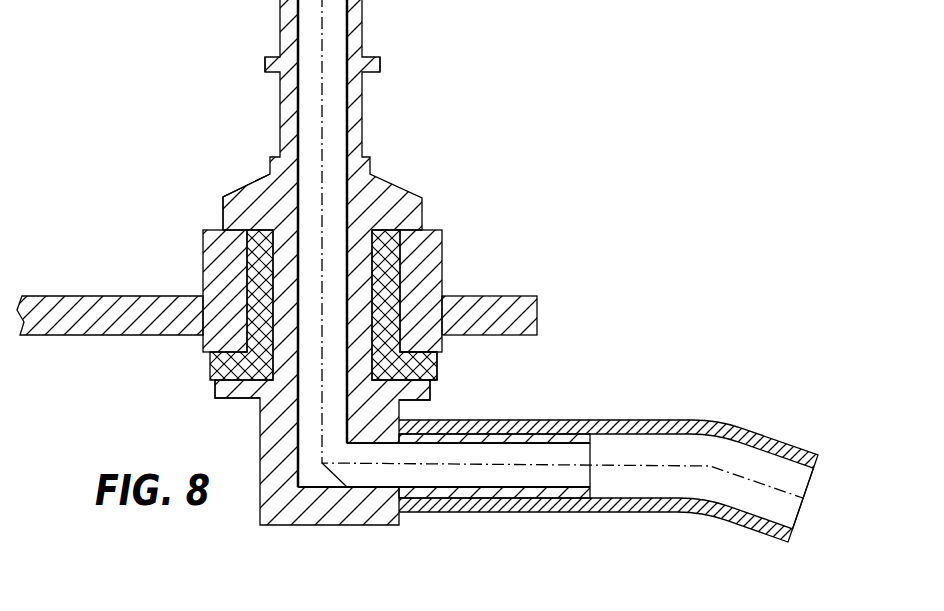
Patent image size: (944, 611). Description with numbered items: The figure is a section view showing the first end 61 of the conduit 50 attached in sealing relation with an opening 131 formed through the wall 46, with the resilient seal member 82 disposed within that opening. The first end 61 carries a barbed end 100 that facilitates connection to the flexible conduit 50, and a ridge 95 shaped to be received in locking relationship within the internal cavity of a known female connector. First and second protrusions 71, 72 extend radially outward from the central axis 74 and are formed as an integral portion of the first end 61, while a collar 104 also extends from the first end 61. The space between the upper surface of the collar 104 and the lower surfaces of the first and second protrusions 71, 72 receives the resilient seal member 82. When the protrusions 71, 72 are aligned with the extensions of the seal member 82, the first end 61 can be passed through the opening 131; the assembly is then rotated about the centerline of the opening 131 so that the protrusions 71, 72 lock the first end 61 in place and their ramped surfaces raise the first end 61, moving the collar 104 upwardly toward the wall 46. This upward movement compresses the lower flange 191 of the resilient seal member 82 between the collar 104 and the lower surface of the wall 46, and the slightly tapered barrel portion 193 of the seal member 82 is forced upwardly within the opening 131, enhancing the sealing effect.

The wall 46 is at (95, 294).
The conduit 50 is at (712, 420).
The first end 61 is at (438, 164).
The first protrusion 71 is at (424, 212).
The second protrusion 72 is at (236, 196).
The central axis 74 is at (840, 512).
The resilient seal member 82 is at (208, 368).
The ridge 95 is at (380, 67).
The barbed end 100 is at (485, 506).
The collar 104 is at (428, 392).
The opening 131 is at (440, 305).
The lower flange 191 is at (438, 366).
The barrel portion 193 is at (395, 290).